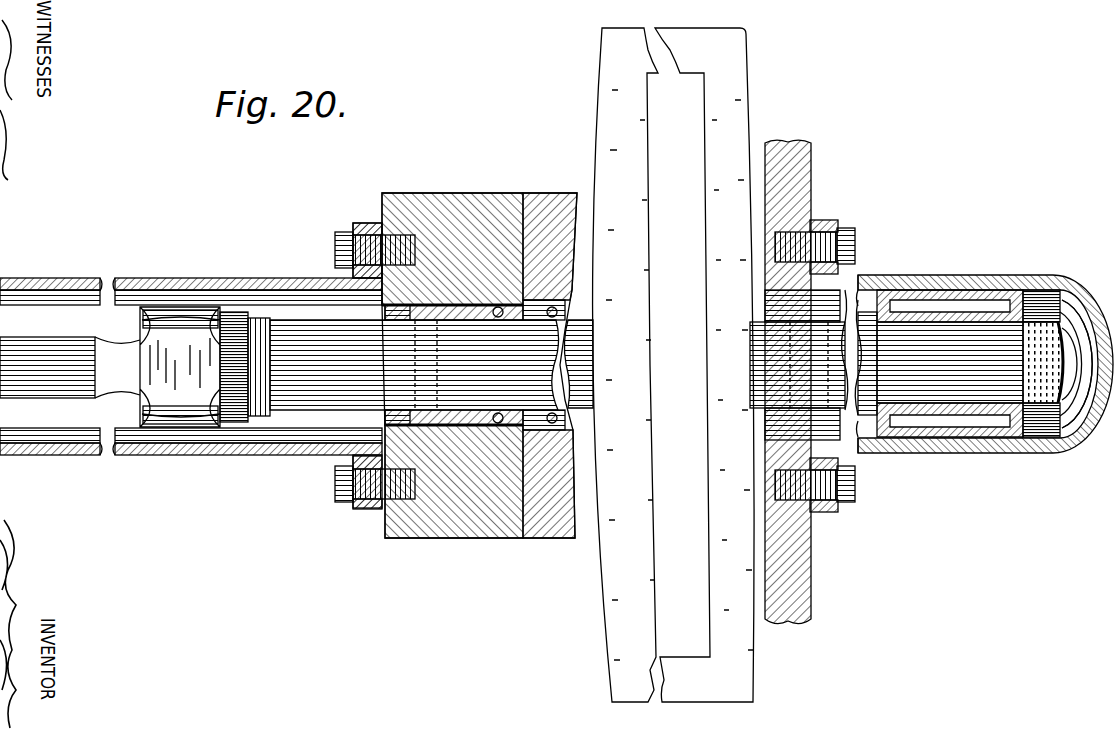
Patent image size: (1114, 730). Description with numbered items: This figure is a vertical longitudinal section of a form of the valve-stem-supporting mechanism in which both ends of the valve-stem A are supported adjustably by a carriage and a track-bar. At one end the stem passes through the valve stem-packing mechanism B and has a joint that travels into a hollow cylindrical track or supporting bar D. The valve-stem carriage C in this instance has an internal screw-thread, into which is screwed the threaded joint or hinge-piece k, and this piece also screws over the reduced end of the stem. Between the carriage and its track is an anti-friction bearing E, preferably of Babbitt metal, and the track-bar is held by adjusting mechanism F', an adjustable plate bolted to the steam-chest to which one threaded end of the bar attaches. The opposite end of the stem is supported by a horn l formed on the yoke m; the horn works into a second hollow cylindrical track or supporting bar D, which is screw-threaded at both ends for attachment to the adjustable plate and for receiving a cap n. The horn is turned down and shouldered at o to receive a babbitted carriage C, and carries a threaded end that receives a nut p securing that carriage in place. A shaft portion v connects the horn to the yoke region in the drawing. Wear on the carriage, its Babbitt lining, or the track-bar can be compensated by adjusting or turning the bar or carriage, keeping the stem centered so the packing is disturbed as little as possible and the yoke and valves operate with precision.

The valve-stem A is at (431, 365).
The valve stem-packing mechanism B is at (400, 318).
The valve-stem carriage C is at (290, 455).
The track or supporting bar D is at (160, 278).
The anti-friction bearing E is at (250, 278).
The adjusting mechanism F' is at (596, 372).
The threaded joint or hinge-piece k is at (110, 367).
The horn l is at (950, 362).
The yoke m is at (674, 365).
The cap n is at (1077, 364).
The shoulder o is at (873, 363).
The nut p is at (1032, 363).
The shaft v is at (805, 365).